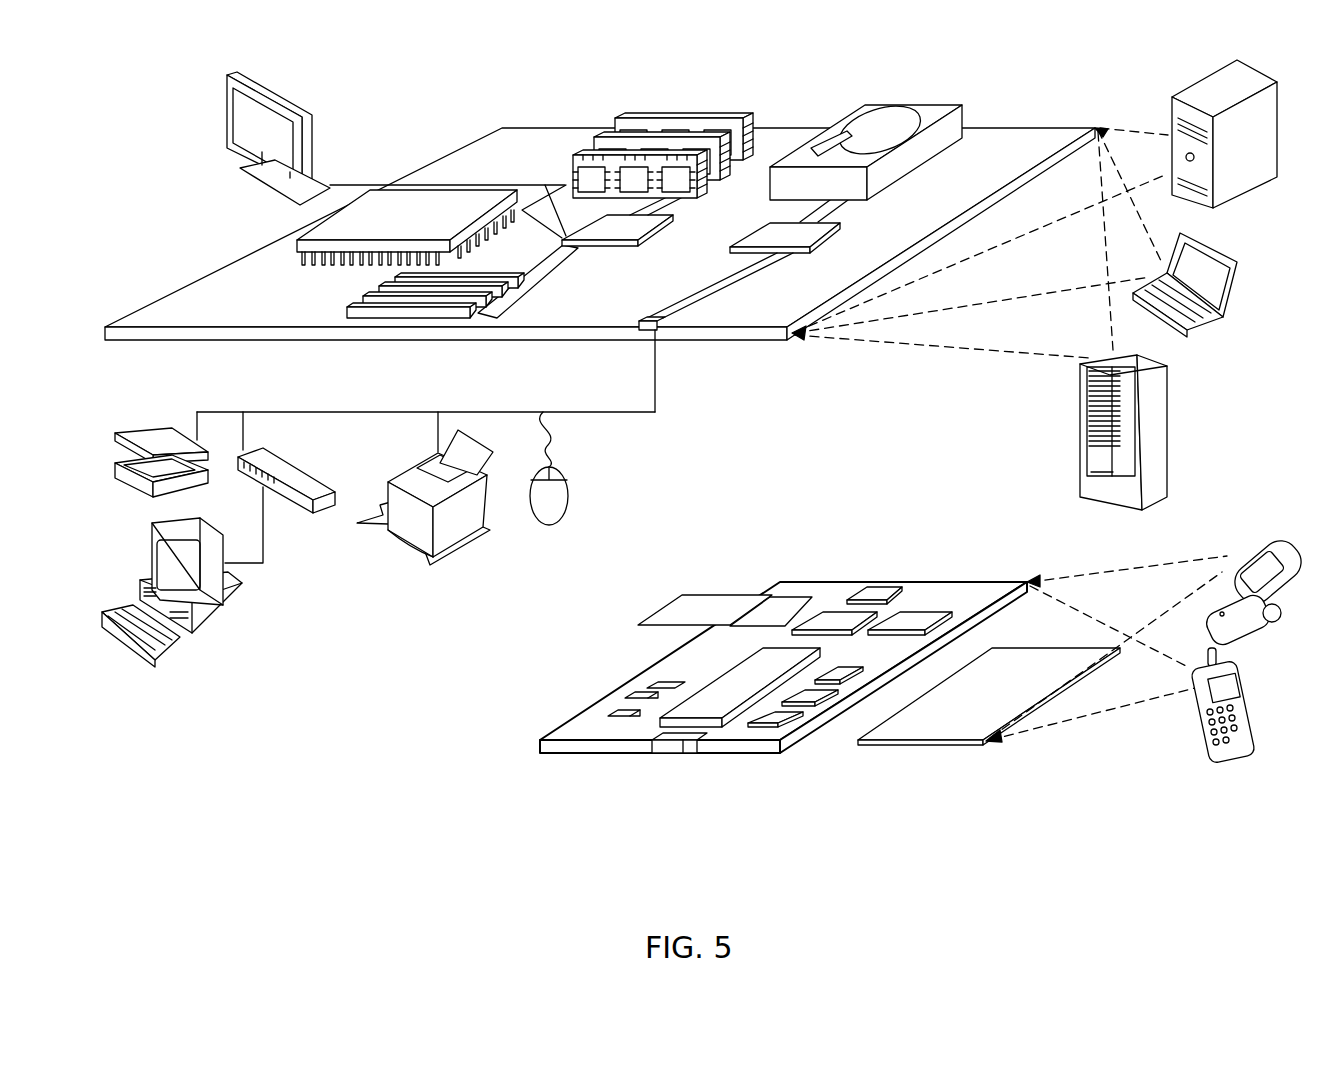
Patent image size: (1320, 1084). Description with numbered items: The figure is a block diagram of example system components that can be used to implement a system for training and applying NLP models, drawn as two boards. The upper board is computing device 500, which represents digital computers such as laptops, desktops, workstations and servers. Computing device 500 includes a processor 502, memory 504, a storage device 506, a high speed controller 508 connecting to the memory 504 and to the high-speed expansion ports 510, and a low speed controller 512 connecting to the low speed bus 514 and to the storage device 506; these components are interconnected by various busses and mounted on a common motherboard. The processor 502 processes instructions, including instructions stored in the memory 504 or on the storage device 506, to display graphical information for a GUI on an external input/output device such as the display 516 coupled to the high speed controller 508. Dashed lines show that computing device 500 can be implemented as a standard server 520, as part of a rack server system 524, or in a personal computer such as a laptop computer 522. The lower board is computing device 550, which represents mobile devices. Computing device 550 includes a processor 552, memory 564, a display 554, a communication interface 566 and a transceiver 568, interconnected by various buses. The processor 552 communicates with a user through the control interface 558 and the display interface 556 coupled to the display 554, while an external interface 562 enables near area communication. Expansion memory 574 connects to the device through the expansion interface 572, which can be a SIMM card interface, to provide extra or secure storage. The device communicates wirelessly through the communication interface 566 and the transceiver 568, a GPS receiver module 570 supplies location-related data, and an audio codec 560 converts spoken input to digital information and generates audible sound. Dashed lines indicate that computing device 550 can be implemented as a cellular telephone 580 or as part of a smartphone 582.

The computing device 500 is at (419, 124).
The processor 502 is at (300, 246).
The memory 504 is at (625, 135).
The storage device 506 is at (858, 104).
The high speed controller 508 is at (600, 226).
The high-speed expansion ports 510 is at (365, 297).
The low speed controller 512 is at (775, 230).
The low speed bus 514 is at (660, 330).
The display 516 is at (228, 72).
The standard server 520 is at (1170, 114).
The laptop computer 522 is at (1240, 262).
The rack server system 524 is at (1083, 440).
The computing device 550 is at (523, 768).
The processor 552 is at (714, 712).
The display 554 is at (948, 728).
The display interface 556 is at (783, 716).
The control interface 558 is at (813, 695).
The audio codec 560 is at (840, 676).
The external interface 562 is at (679, 744).
The memory 564 is at (628, 698).
The communication interface 566 is at (832, 618).
The transceiver 568 is at (911, 618).
The GPS receiver module 570 is at (880, 585).
The expansion interface 572 is at (758, 596).
The expansion memory 574 is at (682, 596).
The cellular telephone 580 is at (1256, 546).
The smartphone 582 is at (1200, 735).